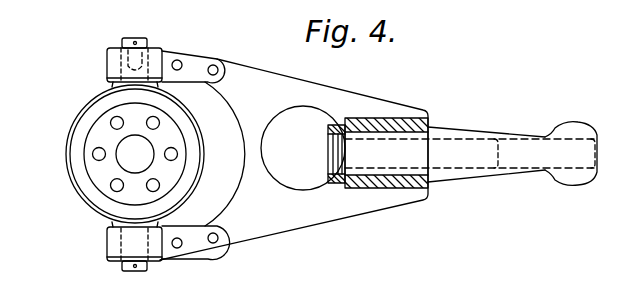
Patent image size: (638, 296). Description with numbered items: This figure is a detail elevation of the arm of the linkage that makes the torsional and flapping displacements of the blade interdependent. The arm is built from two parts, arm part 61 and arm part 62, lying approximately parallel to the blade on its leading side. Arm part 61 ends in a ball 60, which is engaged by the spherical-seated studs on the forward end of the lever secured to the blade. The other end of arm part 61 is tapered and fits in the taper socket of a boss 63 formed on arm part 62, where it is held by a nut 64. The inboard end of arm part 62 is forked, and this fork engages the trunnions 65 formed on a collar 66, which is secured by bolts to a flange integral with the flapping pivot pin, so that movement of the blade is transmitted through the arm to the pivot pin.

The ball 60 is at (572, 122).
The arm part 61 is at (477, 128).
The arm part 62 is at (262, 88).
The boss 63 is at (387, 118).
The nut 64 is at (340, 185).
The trunnions 65 is at (150, 61).
The collar 66 is at (66, 157).